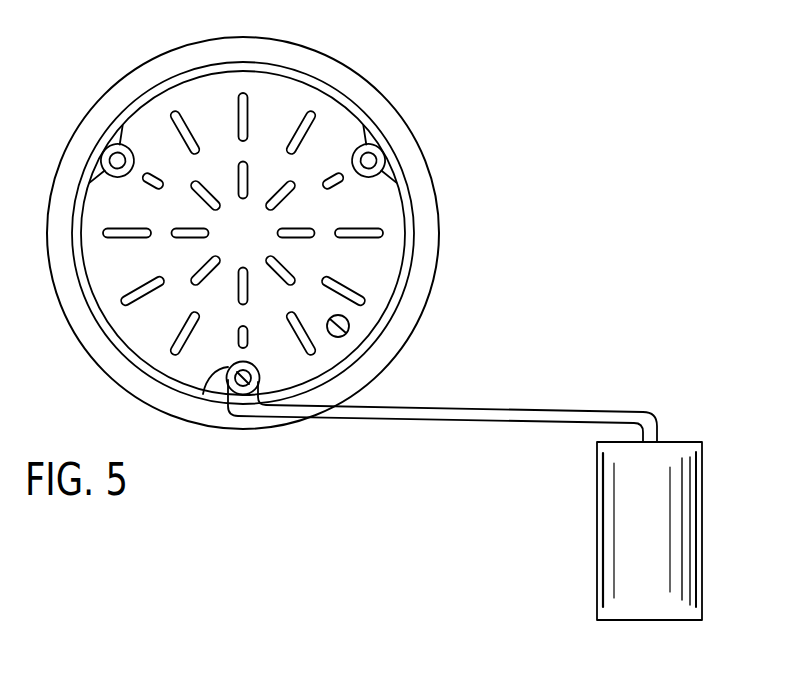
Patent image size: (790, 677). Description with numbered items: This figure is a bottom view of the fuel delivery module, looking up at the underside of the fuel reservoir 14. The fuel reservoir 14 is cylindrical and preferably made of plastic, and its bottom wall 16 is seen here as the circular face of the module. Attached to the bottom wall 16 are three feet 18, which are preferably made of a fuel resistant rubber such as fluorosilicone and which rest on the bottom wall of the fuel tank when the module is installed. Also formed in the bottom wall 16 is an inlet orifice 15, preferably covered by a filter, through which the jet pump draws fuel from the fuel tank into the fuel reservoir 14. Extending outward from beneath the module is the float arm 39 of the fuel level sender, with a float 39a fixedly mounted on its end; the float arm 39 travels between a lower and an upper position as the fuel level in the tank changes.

The fuel reservoir 14 is at (417, 167).
The bottom wall 16 is at (370, 212).
The feet 18 is at (128, 141).
The inlet orifice 15 is at (350, 322).
The float arm 39 is at (506, 418).
The float 39a is at (600, 514).